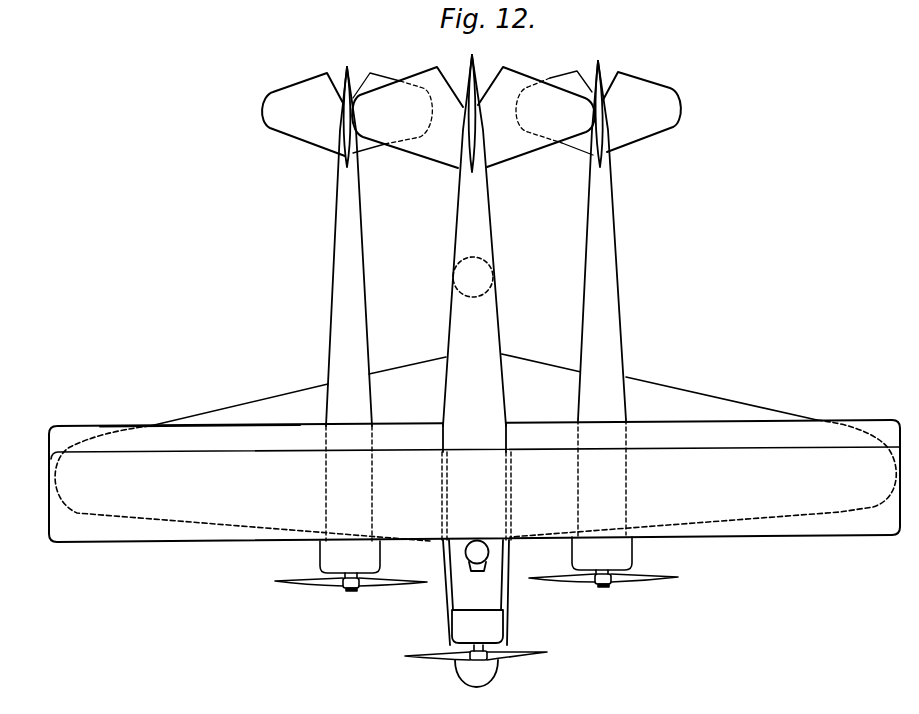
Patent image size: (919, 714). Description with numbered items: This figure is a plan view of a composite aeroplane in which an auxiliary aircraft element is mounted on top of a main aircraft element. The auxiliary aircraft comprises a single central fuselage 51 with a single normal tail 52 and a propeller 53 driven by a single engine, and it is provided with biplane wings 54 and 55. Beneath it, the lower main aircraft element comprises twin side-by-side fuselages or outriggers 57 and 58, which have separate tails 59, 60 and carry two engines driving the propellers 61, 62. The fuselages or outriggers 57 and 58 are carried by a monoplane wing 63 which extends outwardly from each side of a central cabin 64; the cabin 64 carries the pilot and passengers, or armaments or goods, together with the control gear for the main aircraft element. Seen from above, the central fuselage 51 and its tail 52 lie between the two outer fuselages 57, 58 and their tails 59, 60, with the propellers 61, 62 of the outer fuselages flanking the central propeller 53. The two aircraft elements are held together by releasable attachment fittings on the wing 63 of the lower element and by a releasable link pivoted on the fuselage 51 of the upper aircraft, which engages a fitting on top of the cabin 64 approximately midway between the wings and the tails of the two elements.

The central fuselage 51 is at (483, 237).
The normal tail 52 is at (435, 150).
The propeller 53 is at (430, 657).
The biplane wing 54 is at (140, 538).
The biplane wing 55 is at (148, 432).
The fuselage or outrigger 57 is at (338, 240).
The fuselage or outrigger 58 is at (608, 267).
The tail 59 is at (277, 127).
The tail 60 is at (652, 133).
The propeller 61 is at (315, 580).
The propeller 62 is at (645, 577).
The monoplane wing 63 is at (659, 392).
The central cabin 64 is at (457, 268).